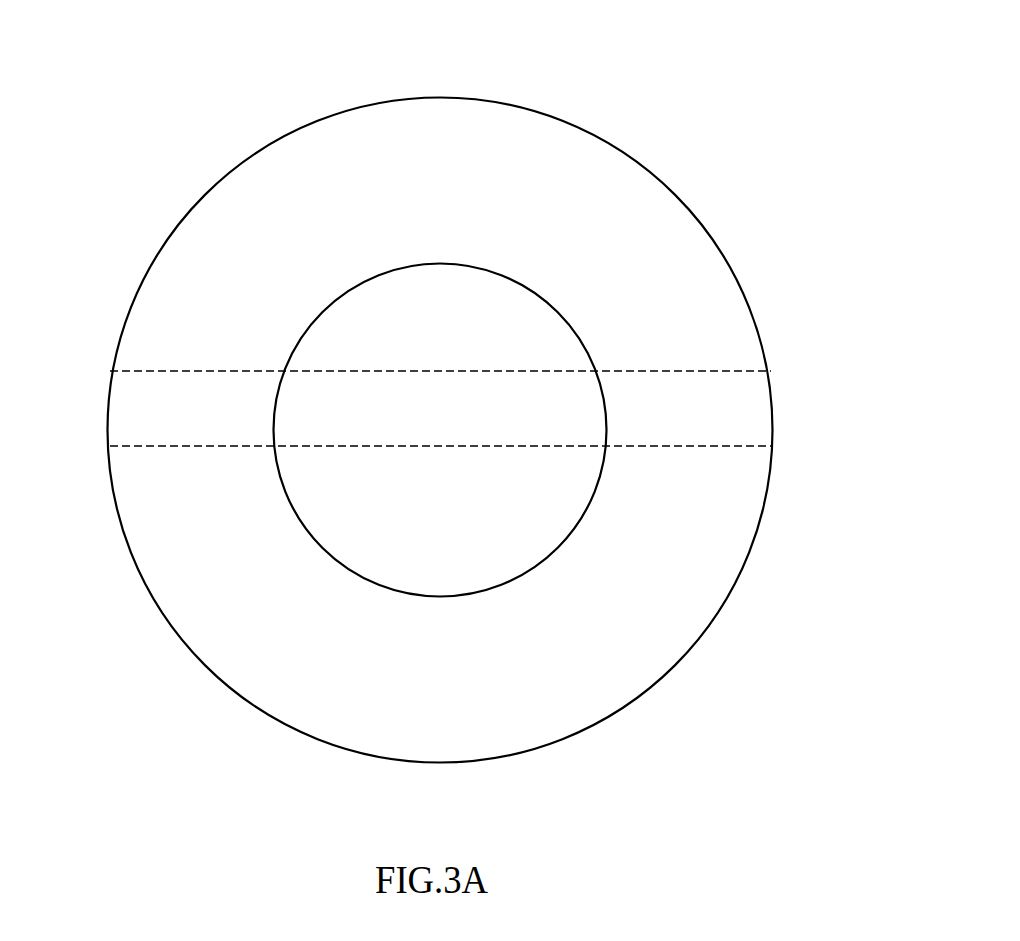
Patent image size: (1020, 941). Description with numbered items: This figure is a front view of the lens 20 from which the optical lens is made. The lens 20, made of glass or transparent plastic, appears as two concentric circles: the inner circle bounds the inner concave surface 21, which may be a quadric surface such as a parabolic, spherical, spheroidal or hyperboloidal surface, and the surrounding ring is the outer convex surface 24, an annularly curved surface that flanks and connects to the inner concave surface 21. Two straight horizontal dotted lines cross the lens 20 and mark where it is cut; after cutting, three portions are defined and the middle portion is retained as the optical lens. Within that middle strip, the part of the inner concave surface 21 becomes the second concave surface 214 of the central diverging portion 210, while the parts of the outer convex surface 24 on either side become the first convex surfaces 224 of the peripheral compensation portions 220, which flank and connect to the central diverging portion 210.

The lens 20 is at (440, 386).
The inner concave surface 21 is at (520, 319).
The outer convex surface 24 is at (642, 205).
The peripheral compensation portion 220 is at (444, 372).
The first convex surface 224 is at (210, 399).
The central diverging portion 210 is at (413, 423).
The second concave surface 214 is at (498, 423).